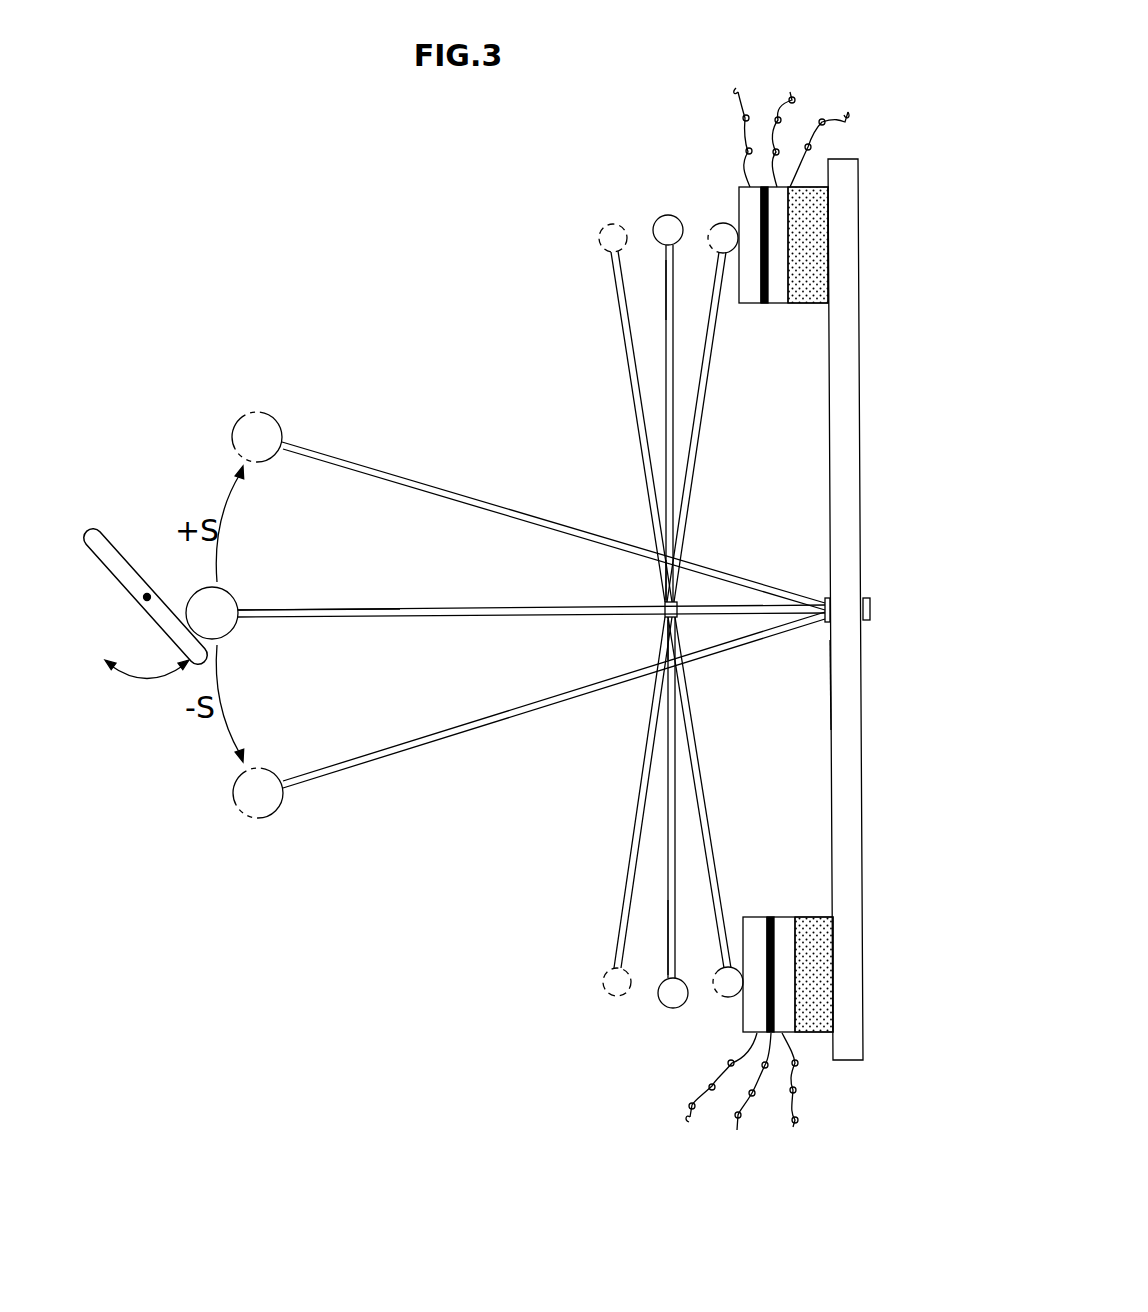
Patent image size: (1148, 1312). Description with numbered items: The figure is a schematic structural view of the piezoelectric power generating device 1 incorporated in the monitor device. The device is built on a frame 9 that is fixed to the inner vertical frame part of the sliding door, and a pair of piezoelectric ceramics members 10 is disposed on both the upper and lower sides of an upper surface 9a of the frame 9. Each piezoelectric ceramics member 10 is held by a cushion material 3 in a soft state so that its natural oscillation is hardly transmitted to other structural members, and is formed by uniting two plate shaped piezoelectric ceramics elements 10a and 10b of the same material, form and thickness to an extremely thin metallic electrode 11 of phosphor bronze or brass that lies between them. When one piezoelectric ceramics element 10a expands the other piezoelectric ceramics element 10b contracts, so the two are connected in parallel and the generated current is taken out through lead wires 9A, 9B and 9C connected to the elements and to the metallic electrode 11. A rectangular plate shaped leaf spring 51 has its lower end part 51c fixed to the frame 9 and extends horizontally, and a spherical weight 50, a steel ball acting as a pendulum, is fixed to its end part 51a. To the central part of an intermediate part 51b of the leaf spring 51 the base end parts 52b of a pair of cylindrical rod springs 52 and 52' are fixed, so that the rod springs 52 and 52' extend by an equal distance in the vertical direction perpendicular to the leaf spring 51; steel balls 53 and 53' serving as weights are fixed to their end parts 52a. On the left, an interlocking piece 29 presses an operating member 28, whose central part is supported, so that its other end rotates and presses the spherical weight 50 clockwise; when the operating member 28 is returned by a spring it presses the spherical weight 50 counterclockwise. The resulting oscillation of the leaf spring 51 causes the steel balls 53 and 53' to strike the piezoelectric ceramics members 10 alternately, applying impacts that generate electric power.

The piezoelectric power generating device 1 is at (402, 243).
The cushion material 3 is at (822, 255).
The frame 9 is at (872, 755).
The upper surface 9a is at (829, 684).
The lead wire 9A is at (742, 133).
The lead wire 9B is at (848, 124).
The lead wire 9C is at (775, 100).
The piezoelectric ceramics member 10 is at (732, 189).
The piezoelectric ceramics element 10a is at (756, 304).
The piezoelectric ceramics element 10b is at (782, 304).
The metallic electrode 11 is at (767, 304).
The operating member 28 is at (117, 572).
The interlocking piece 29 is at (97, 516).
The spherical weight 50 is at (262, 412).
The leaf spring 51 is at (396, 470).
The end part 51a is at (270, 608).
The intermediate part 51b is at (693, 603).
The lower end part 51c is at (822, 598).
The rod spring 52 is at (636, 797).
The rod spring 52' is at (628, 423).
The end part 52a is at (665, 284).
The base end part 52b is at (664, 585).
The steel ball 53 is at (646, 1021).
The steel ball 53' is at (637, 203).